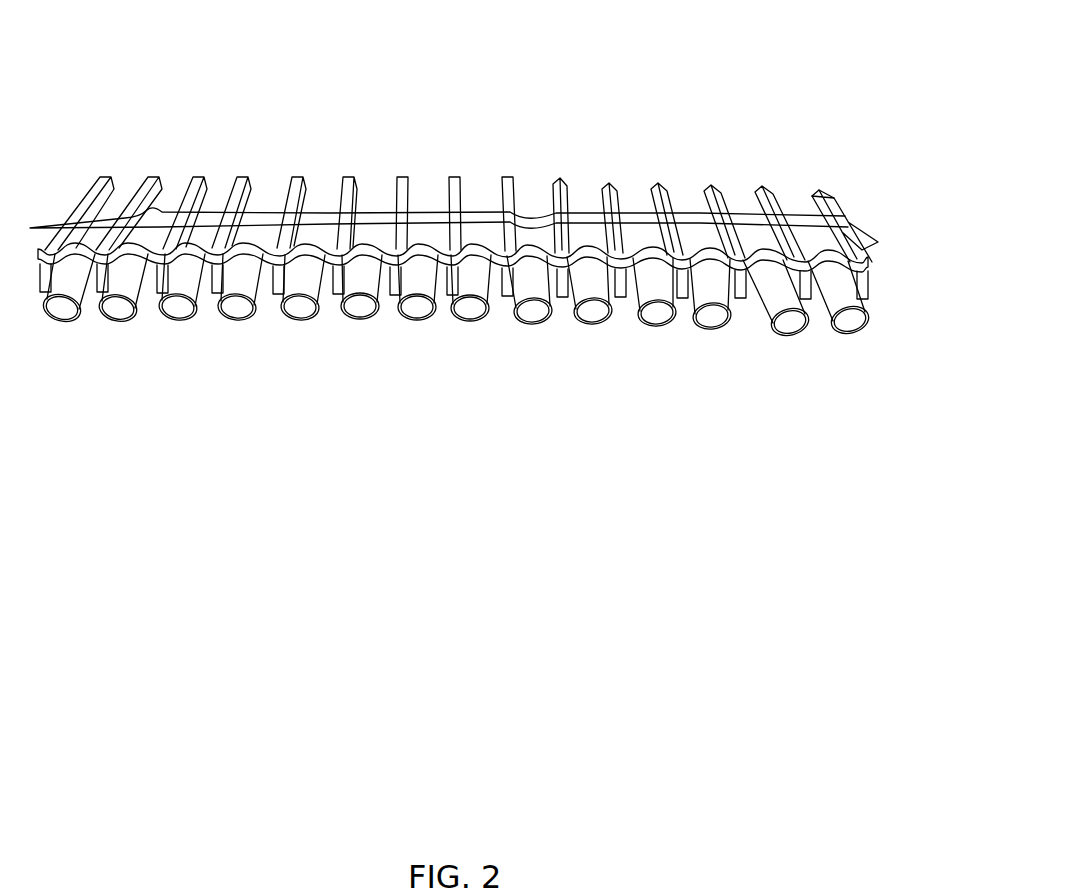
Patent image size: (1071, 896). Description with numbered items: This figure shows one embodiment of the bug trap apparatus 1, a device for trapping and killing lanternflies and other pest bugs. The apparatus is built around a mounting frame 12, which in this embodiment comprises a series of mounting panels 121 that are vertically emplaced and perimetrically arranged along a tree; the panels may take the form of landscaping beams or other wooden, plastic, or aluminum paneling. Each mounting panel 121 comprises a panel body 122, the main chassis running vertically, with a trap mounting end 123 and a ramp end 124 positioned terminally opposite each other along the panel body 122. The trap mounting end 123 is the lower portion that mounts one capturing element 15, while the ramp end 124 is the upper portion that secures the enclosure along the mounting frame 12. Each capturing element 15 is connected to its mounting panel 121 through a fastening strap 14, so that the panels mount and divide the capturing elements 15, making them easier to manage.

The bug trap apparatus 1 is at (580, 62).
The mounting frame 12 is at (655, 118).
The mounting panel 121 is at (242, 152).
The panel body 122 is at (833, 197).
The trap mounting end 123 is at (873, 295).
The ramp end 124 is at (815, 185).
The fastening strap 14 is at (870, 262).
The capturing element 15 is at (718, 335).